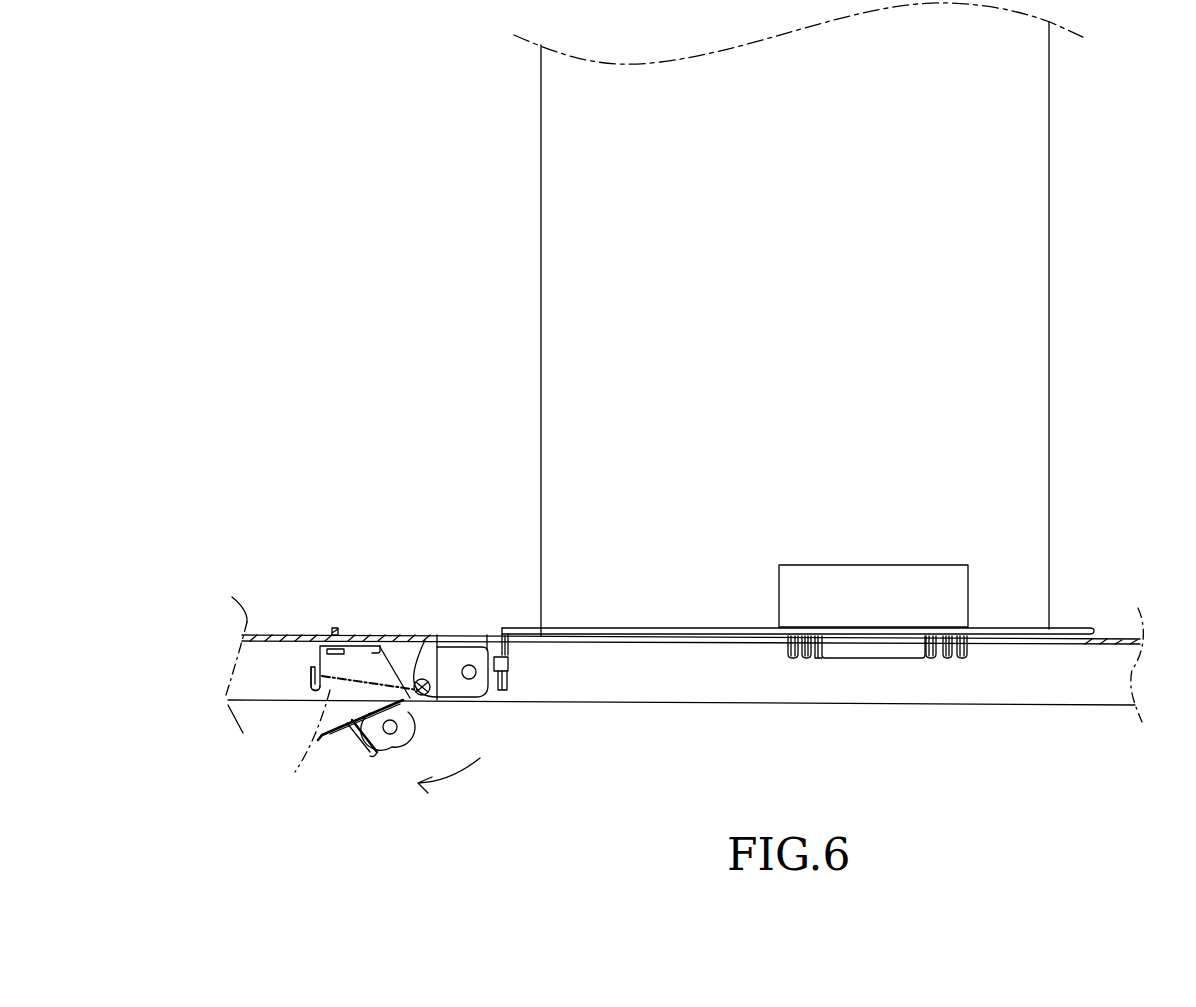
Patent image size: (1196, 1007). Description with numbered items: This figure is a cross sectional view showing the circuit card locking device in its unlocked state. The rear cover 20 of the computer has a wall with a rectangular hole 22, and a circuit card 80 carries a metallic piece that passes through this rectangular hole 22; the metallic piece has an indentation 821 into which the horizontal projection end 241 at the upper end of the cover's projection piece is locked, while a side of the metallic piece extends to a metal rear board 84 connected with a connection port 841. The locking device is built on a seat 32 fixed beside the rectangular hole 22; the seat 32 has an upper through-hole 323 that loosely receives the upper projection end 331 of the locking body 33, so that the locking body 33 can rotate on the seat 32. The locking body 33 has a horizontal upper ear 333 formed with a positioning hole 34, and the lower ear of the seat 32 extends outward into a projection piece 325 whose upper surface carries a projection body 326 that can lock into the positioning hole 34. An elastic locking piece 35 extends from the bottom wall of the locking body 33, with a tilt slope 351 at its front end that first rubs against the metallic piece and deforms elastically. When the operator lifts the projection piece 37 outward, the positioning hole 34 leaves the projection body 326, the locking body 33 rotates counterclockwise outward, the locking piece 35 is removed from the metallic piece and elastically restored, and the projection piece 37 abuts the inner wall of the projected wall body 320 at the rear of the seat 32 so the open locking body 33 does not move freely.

The rear cover 20 is at (1107, 640).
The rectangular hole 22 is at (455, 638).
The seat 32 is at (365, 642).
The projected wall body 320 is at (311, 672).
The upper through-hole 323 is at (427, 650).
The projection piece 325 is at (487, 637).
The projection body 326 is at (470, 672).
The locking body 33 is at (347, 723).
The upper projection end 331 is at (425, 692).
The upper ear 333 is at (397, 727).
The positioning hole 34 is at (400, 735).
The locking piece 35 is at (362, 730).
The tilt slope 351 is at (376, 754).
The projection piece 37 is at (320, 737).
The circuit card 80 is at (1035, 462).
The indentation 821 is at (502, 655).
The rear board 84 is at (1062, 632).
The connection port 841 is at (876, 655).
The horizontal projection end 241 is at (507, 663).